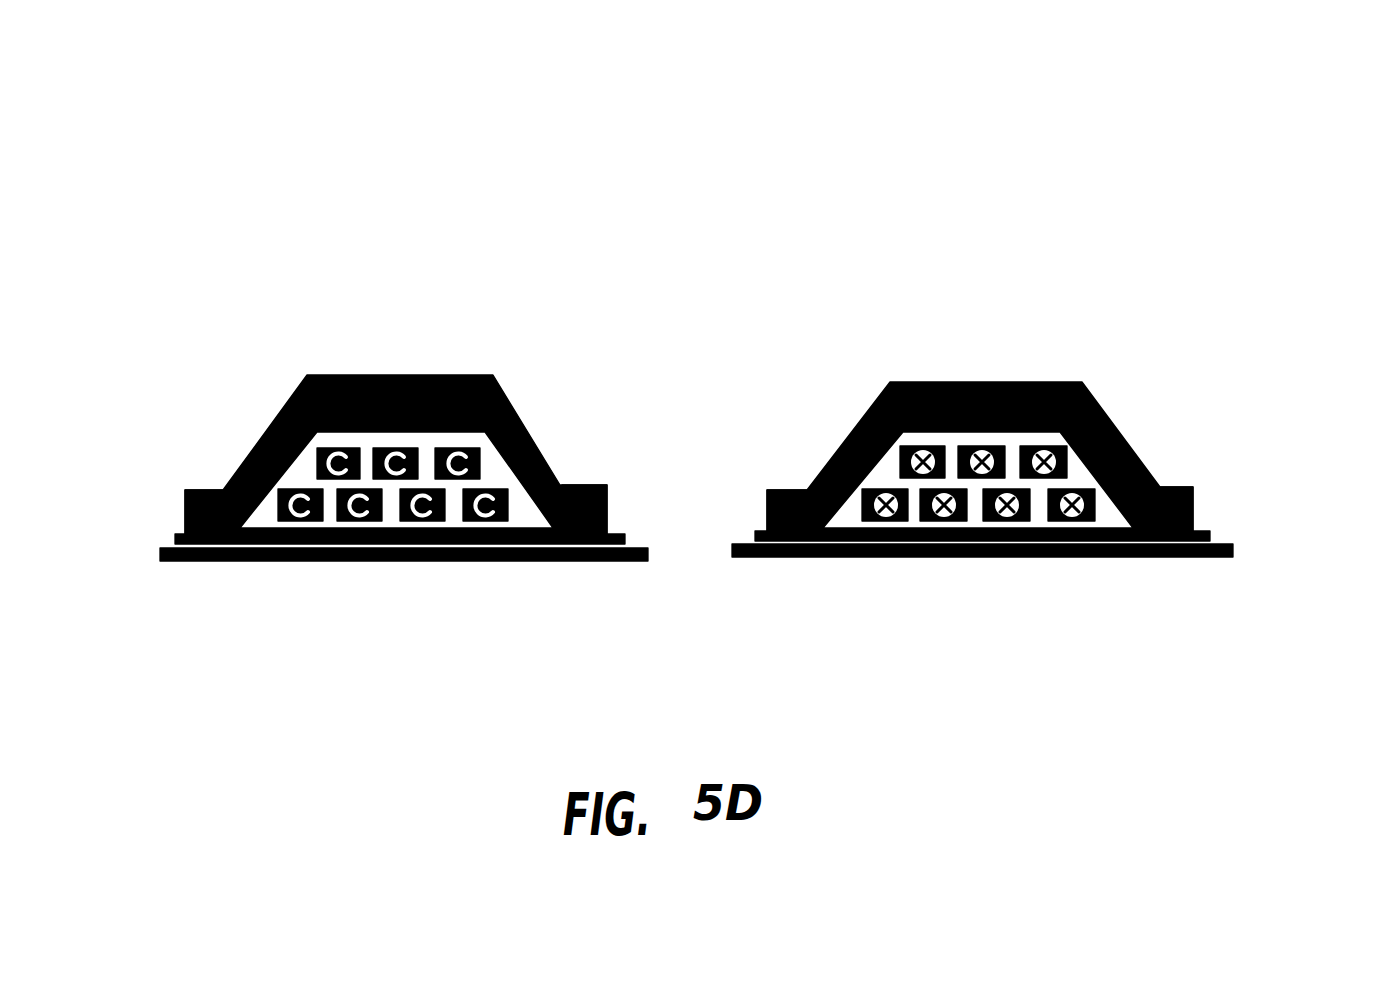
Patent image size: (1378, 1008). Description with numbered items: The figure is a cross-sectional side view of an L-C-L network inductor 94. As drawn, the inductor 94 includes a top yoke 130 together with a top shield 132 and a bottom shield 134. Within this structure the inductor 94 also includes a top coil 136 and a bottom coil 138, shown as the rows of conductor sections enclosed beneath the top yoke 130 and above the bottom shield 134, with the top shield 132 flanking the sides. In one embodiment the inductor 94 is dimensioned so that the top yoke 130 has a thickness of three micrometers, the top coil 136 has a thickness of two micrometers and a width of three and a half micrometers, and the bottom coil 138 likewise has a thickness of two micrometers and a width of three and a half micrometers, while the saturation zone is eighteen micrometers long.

The inductor 94 is at (750, 163).
The top yoke 130 is at (390, 376).
The top shield 132 is at (182, 537).
The bottom shield 134 is at (157, 548).
The top coil 136 is at (485, 455).
The bottom coil 138 is at (515, 502).